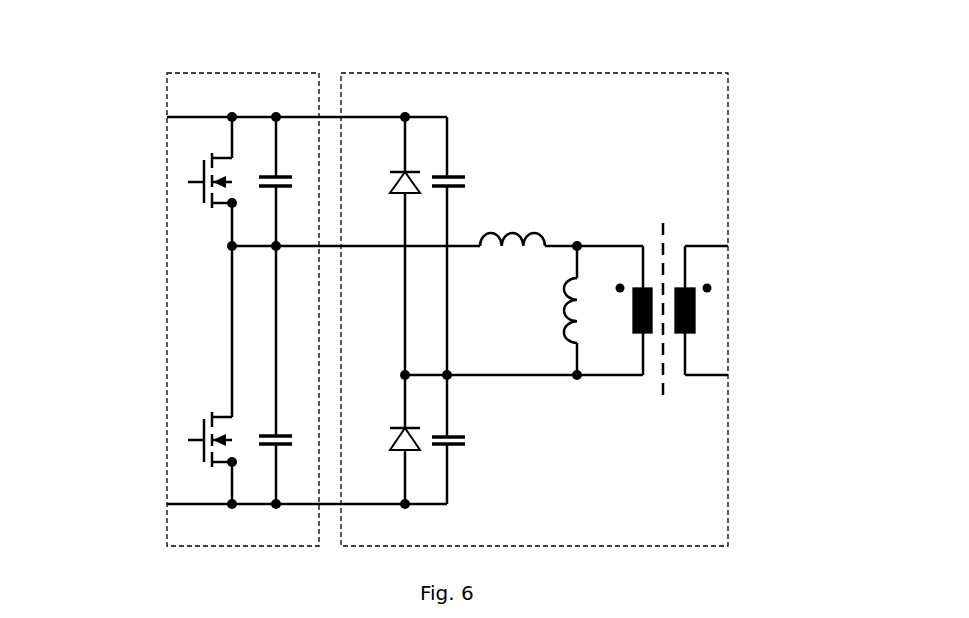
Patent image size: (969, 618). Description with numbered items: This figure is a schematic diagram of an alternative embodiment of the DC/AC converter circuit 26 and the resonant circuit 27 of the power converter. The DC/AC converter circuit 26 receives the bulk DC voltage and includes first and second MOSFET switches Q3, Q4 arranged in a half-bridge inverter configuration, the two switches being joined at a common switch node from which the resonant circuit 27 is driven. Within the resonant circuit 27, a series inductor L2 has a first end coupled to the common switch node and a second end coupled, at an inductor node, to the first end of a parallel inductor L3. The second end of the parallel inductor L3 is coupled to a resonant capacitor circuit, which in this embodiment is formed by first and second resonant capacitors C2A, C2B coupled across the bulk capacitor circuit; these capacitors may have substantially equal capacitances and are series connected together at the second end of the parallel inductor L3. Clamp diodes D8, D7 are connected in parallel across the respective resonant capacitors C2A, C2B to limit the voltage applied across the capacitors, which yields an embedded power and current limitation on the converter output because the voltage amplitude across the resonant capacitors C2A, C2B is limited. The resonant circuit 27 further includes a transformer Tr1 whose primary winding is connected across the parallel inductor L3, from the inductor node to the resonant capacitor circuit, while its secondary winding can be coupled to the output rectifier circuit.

The DC/AC converter circuit 26 is at (166, 208).
The resonant circuit 27 is at (732, 139).
The first MOSFET switch Q3 is at (212, 167).
The second MOSFET switch Q4 is at (212, 426).
The clamp diode D7 is at (389, 171).
The clamp diode D8 is at (389, 428).
The first resonant capacitor C2A is at (464, 425).
The second resonant capacitor C2B is at (464, 167).
The series inductor L2 is at (512, 224).
The parallel inductor L3 is at (549, 310).
The transformer Tr1 is at (672, 290).